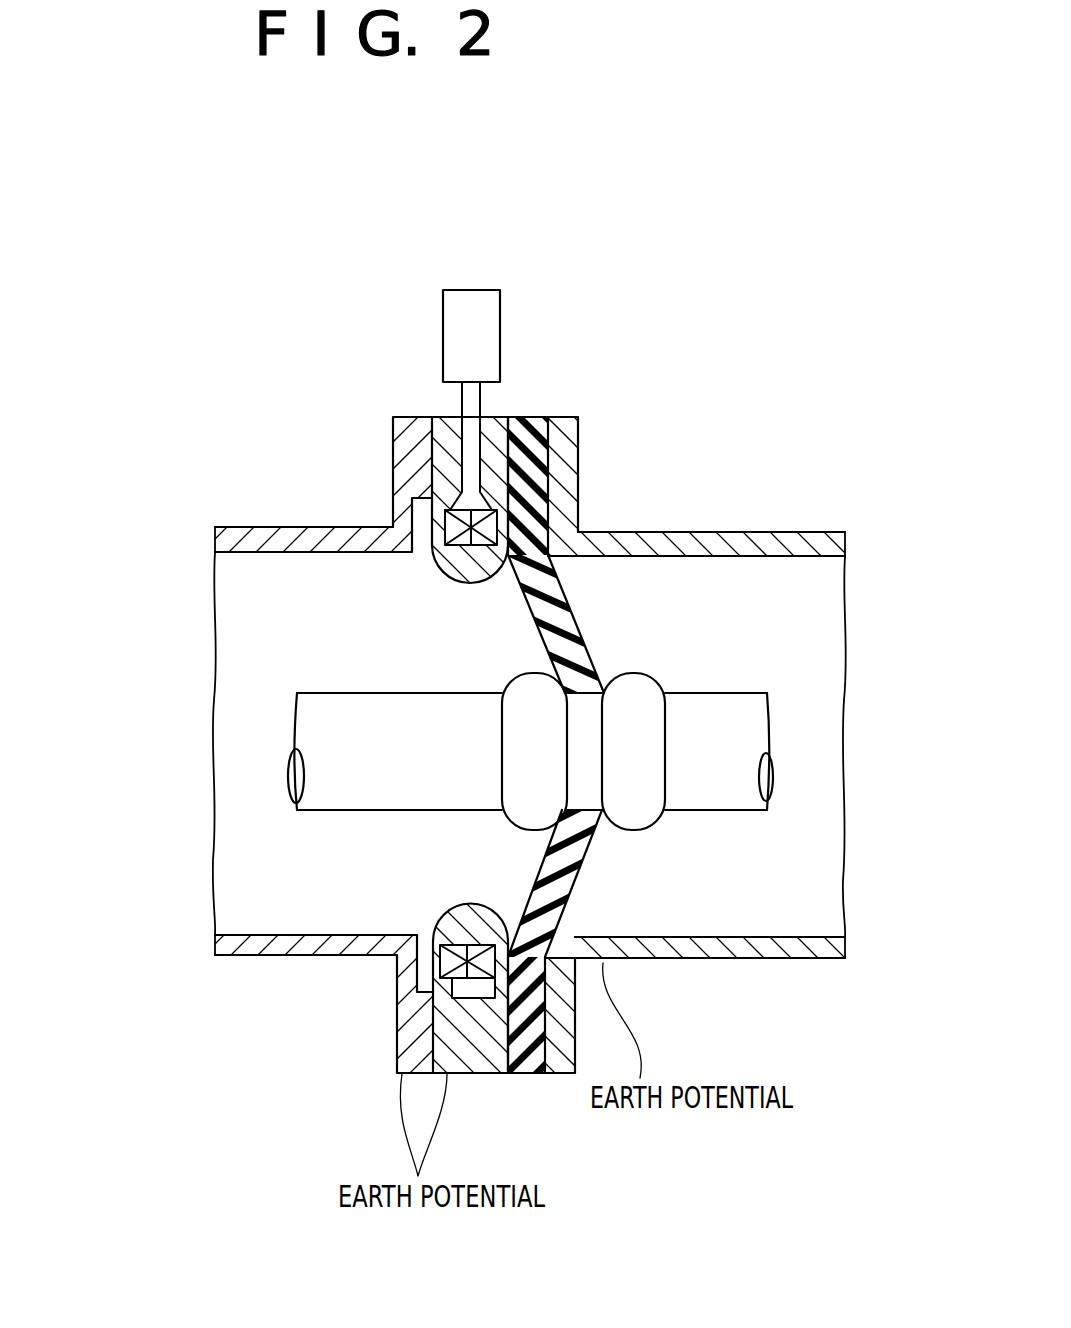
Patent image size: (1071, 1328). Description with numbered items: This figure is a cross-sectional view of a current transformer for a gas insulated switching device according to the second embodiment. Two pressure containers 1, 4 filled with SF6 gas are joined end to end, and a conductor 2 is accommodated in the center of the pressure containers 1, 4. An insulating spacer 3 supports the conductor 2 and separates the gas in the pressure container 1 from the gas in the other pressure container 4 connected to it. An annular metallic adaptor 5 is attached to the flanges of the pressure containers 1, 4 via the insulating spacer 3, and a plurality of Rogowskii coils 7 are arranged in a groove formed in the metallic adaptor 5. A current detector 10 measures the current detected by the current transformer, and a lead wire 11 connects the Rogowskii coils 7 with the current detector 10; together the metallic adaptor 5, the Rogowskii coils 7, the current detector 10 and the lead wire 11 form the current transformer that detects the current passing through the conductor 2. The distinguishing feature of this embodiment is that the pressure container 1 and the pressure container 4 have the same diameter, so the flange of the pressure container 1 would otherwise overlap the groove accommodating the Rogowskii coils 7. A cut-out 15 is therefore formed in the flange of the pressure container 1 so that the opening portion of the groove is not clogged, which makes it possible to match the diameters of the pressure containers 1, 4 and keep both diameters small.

The pressure container 1 is at (240, 527).
The conductor 2 is at (315, 793).
The insulating spacer 3 is at (532, 440).
The pressure container 4 is at (737, 548).
The metallic adaptor 5 is at (492, 427).
The Rogowskii coils 7 is at (443, 528).
The current detector 10 is at (481, 320).
The lead wire 11 is at (477, 460).
The cut-out 15 is at (418, 553).